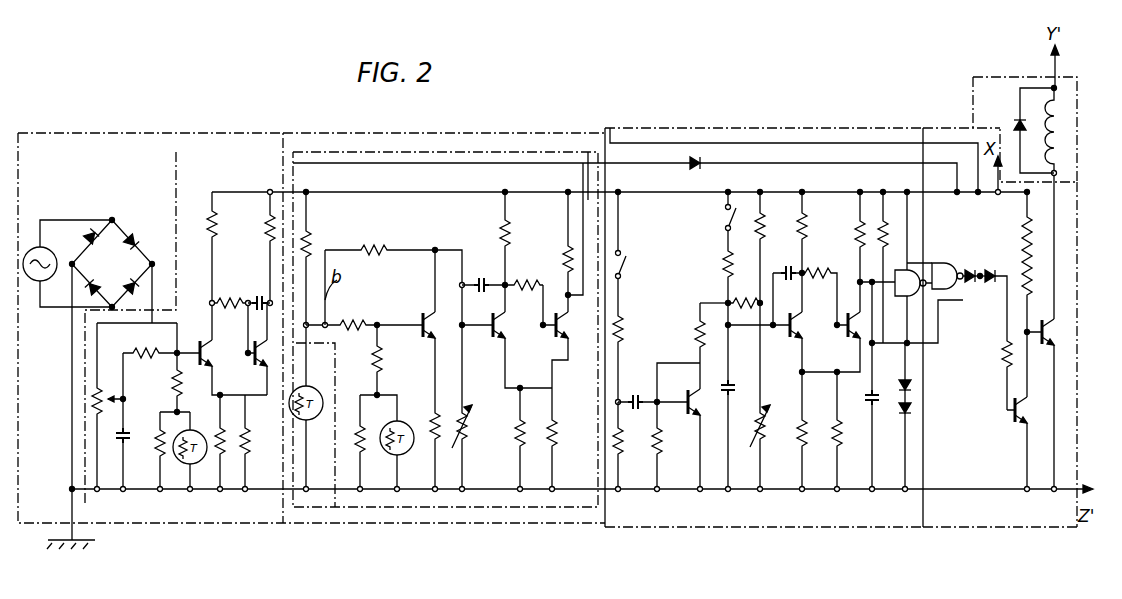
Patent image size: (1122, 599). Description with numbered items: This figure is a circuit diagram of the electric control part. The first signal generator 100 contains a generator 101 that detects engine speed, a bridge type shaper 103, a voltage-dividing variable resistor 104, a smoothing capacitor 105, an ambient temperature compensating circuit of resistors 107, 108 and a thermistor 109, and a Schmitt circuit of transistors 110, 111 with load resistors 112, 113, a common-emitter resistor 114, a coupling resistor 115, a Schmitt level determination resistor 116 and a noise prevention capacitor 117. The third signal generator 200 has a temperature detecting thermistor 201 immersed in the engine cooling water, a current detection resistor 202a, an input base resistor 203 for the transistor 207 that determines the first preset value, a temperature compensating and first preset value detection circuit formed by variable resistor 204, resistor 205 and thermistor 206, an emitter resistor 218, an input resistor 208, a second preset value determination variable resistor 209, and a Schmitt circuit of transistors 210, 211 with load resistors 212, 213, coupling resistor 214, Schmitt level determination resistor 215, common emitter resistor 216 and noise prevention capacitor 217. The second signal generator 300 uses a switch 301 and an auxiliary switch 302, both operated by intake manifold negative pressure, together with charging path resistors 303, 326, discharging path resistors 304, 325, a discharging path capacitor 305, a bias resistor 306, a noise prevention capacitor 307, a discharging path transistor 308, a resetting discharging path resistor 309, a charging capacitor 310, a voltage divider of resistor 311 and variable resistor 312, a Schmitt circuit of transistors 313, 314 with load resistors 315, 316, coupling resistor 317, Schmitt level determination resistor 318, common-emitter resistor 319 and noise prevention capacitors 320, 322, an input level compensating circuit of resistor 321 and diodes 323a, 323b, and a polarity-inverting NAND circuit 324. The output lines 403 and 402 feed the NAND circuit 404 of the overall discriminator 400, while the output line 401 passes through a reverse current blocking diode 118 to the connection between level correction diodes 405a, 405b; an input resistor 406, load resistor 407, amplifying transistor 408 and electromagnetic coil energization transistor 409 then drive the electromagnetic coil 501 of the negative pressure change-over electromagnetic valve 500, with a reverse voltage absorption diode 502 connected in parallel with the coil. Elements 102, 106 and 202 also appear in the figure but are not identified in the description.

The first signal generator 100 is at (33, 527).
The generator 101 is at (40, 246).
The DC power supply circuit 102 is at (83, 433).
The bridge type shaper 103 is at (115, 232).
The voltage-dividing variable resistor 104 is at (121, 398).
The smoothing capacitor 105 is at (123, 450).
The resistor 106 is at (148, 350).
The resistor 107 is at (175, 380).
The resistor 108 is at (160, 445).
The thermistor 109 is at (190, 470).
The transistor 110 is at (206, 345).
The transistor 111 is at (270, 353).
The load resistor 112 is at (204, 222).
The load resistor 113 is at (268, 234).
The common-emitter resistor 114 is at (222, 470).
The coupling resistor 115 is at (233, 302).
The Schmitt level determination resistor 116 is at (248, 432).
The noise prevention capacitor 117 is at (260, 298).
The reverse current blocking diode 118 is at (688, 168).
The third signal generator 200 is at (410, 133).
The temperature detecting thermistor 201 is at (313, 417).
The control circuit 202 is at (545, 508).
The current detection resistor 202a is at (312, 247).
The input base resistor 203 is at (345, 322).
The variable resistor 204 is at (382, 362).
The resistor 205 is at (338, 460).
The thermistor 206 is at (414, 448).
The transistor 207 is at (438, 300).
The input resistor 208 is at (378, 247).
The second preset value determination variable resistor 209 is at (470, 420).
The transistor 210 is at (505, 333).
The transistor 211 is at (572, 345).
The load resistor 212 is at (500, 225).
The load resistor 213 is at (566, 250).
The coupling resistor 214 is at (531, 286).
The Schmitt level determination resistor 215 is at (557, 428).
The common emitter resistor 216 is at (516, 432).
The noise prevention capacitor 217 is at (480, 282).
The emitter resistor 218 is at (430, 425).
The second signal generator 300 is at (718, 528).
The switch 301 is at (627, 262).
The switch 302 is at (726, 220).
The charging path resistor 303 is at (626, 325).
The discharging path resistor 304 is at (626, 440).
The discharging path capacitor 305 is at (632, 392).
The bias resistor 306 is at (668, 440).
The noise prevention capacitor 307 is at (697, 340).
The discharging path transistor 308 is at (702, 425).
The resetting discharging path resistor 309 is at (725, 262).
The charging capacitor 310 is at (740, 385).
The resistor 311 is at (763, 240).
The variable resistor 312 is at (768, 418).
The transistor 313 is at (805, 337).
The transistor 314 is at (857, 348).
The load resistor 315 is at (808, 240).
The load resistor 316 is at (856, 225).
The coupling resistor 317 is at (825, 266).
The Schmitt level determination resistor 318 is at (834, 432).
The common-emitter resistor 319 is at (798, 425).
The noise prevention capacitor 320 is at (790, 276).
The resistor 321 is at (888, 225).
The noise prevention capacitor 322 is at (876, 398).
The diode 323a is at (912, 388).
The diode 323b is at (912, 410).
The NAND circuit 324 is at (918, 296).
The discharging path resistor 325 is at (699, 306).
The charging path resistor 326 is at (744, 300).
The overall discriminator 400 is at (872, 128).
The output line 401 is at (505, 163).
The output line 402 is at (700, 143).
The output line 403 is at (948, 290).
The NAND circuit 404 is at (960, 270).
The level correction diode 405a is at (969, 270).
The level correction diode 405b is at (1000, 265).
The input resistor 406 is at (1003, 350).
The load resistor 407 is at (1040, 293).
The amplifying transistor 408 is at (1022, 425).
The electromagnetic coil energization transistor 409 is at (1058, 337).
The negative pressure change-over electromagnetic valve 500 is at (973, 95).
The electromagnetic coil 501 is at (1048, 130).
The reverse voltage absorption diode 502 is at (1015, 122).